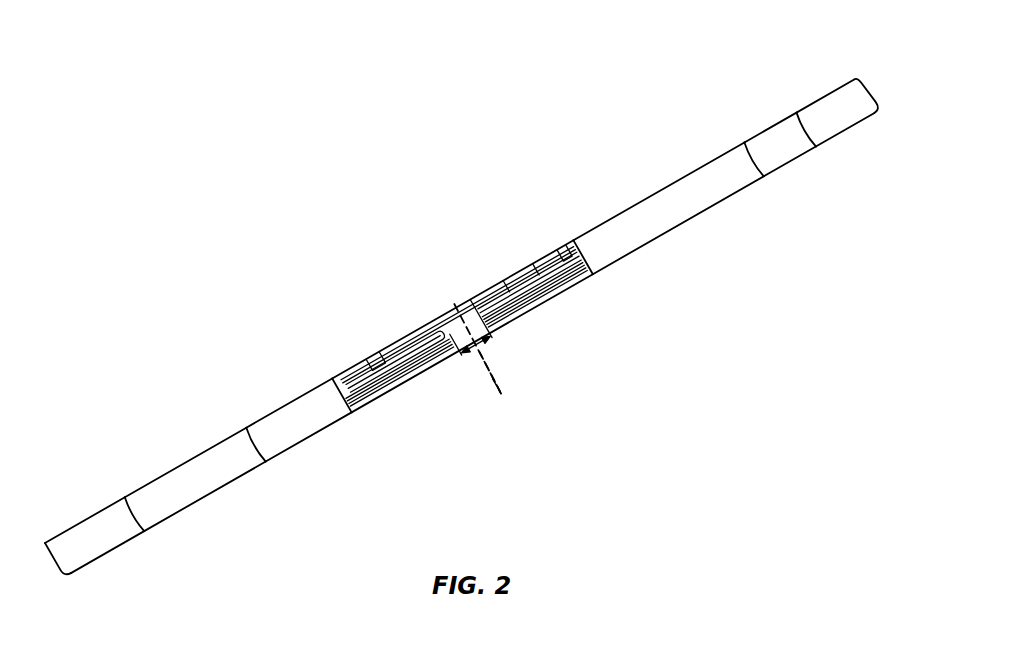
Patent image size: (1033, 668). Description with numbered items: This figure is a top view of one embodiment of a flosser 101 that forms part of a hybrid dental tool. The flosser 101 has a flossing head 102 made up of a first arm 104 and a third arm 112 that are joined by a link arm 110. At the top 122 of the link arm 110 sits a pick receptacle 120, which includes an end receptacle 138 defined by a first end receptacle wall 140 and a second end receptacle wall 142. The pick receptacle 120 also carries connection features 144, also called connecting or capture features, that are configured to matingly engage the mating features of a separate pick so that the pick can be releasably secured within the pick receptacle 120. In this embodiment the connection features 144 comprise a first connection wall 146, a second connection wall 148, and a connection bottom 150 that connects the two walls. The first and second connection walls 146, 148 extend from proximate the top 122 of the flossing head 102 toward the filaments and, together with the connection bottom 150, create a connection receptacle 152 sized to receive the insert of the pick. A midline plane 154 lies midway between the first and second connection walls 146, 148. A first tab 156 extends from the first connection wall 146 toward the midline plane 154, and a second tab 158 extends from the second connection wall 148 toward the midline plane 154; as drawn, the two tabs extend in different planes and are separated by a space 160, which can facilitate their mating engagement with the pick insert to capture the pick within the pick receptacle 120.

The flosser 101 is at (462, 326).
The flossing head 102 is at (198, 498).
The first arm 104 is at (85, 560).
The link arm 110 is at (726, 153).
The third arm 112 is at (830, 95).
The pick receptacle 120 is at (470, 298).
The top 122 is at (193, 477).
The end receptacle 138 is at (662, 218).
The first end receptacle wall 140 is at (248, 428).
The second end receptacle wall 142 is at (757, 165).
The connection features 144 is at (497, 401).
The first connection wall 146 is at (346, 380).
The second connection wall 148 is at (577, 268).
The connection bottom 150 is at (417, 347).
The connection receptacle 152 is at (452, 290).
The midline plane 154 is at (488, 376).
The first tab 156 is at (430, 345).
The second tab 158 is at (519, 292).
The space 160 is at (461, 343).